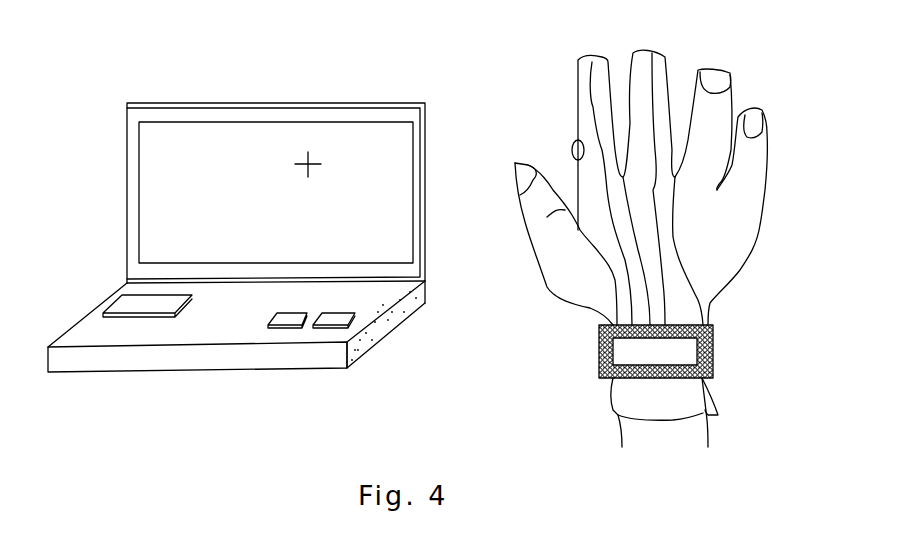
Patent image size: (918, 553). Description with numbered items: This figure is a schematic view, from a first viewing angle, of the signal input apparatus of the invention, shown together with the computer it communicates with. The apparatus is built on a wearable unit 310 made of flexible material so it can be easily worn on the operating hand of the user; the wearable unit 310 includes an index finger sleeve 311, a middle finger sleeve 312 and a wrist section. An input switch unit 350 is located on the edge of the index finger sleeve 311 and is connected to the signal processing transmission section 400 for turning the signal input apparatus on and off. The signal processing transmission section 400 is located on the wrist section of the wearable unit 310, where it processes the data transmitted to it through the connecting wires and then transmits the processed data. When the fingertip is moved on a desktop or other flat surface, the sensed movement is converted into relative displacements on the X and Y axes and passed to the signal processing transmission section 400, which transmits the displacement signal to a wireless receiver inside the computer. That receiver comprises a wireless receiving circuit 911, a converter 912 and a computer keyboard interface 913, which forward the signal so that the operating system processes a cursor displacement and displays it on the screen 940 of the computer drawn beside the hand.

The screen 940 is at (366, 153).
The computer keyboard interface 913 is at (146, 306).
The converter 912 is at (288, 322).
The wireless receiving circuit 911 is at (340, 320).
The index finger sleeve 311 is at (583, 93).
The middle finger sleeve 312 is at (660, 72).
The input switch unit 350 is at (572, 148).
The signal processing transmission section 400 is at (623, 355).
The wearable unit 310 is at (685, 408).